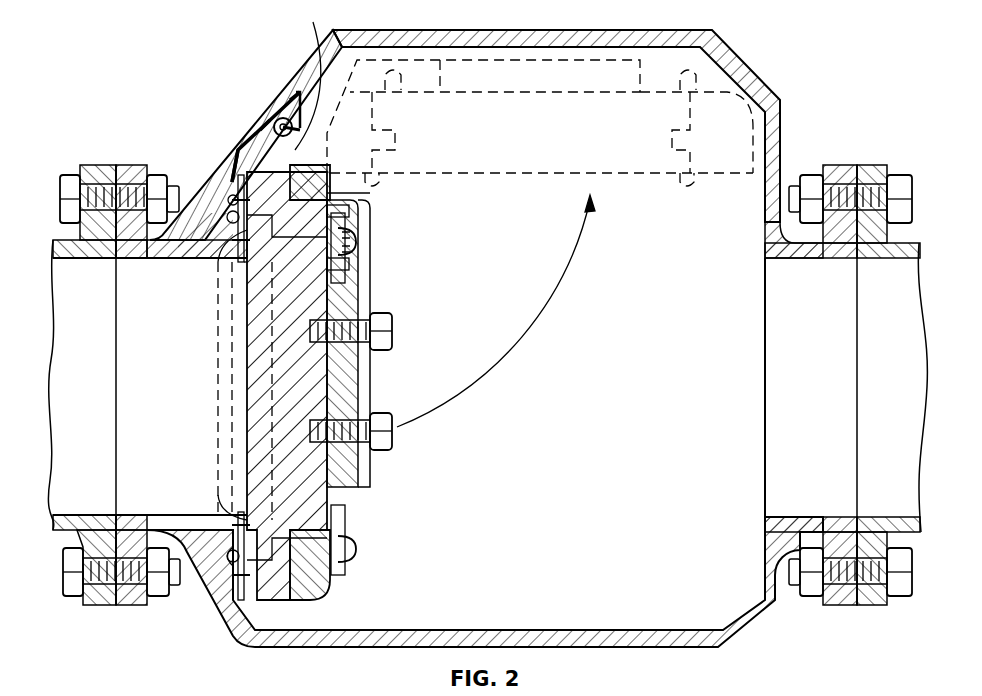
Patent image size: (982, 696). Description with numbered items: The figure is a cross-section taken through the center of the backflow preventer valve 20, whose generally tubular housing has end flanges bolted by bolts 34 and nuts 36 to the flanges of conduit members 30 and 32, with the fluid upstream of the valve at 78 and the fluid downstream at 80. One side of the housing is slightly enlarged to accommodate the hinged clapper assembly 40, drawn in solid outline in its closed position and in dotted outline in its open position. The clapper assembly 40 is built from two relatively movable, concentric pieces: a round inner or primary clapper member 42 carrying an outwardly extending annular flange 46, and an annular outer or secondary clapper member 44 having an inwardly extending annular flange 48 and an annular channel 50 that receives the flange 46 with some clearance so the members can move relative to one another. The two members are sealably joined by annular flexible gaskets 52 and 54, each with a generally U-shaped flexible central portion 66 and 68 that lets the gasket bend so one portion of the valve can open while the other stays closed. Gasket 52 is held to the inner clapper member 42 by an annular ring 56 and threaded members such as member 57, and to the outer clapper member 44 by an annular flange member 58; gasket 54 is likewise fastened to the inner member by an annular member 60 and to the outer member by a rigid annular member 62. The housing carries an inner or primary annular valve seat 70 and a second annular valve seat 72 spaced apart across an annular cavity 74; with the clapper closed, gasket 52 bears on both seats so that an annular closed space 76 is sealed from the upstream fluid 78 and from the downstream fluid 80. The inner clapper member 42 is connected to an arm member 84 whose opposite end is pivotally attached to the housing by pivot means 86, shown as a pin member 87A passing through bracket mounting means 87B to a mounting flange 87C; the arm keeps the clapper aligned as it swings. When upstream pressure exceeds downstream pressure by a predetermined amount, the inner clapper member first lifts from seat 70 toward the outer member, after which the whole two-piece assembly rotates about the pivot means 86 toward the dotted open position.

The backflow preventer valve 20 is at (612, 10).
The conduit member 30 is at (68, 514).
The conduit member 32 is at (876, 252).
The bolts 34 is at (67, 180).
The nuts 36 is at (157, 180).
The hinged clapper assembly 40 is at (544, 188).
The inner or primary clapper member 42 is at (283, 484).
The outer or secondary clapper member 44 is at (306, 578).
The outwardly extending annular flange 46 is at (246, 282).
The inwardly extending annular flange 48 is at (373, 195).
The annular channel 50 is at (305, 195).
The annular flexible gasket 52 is at (227, 178).
The annular flexible gasket 54 is at (333, 280).
The annular ring 56 is at (230, 246).
The threaded member 57 is at (245, 270).
The annular flange member 58 is at (255, 165).
The annular member 60 is at (337, 268).
The rigid annular member 62 is at (350, 208).
The U-shaped flexible central portion 66 is at (228, 214).
The U-shaped flexible central portion 68 is at (350, 238).
The inner or primary annular valve seat 70 is at (240, 262).
The annular valve seat 72 is at (230, 200).
The annular cavity 74 is at (233, 238).
The annular closed space 76 is at (230, 566).
The upstream fluid 78 is at (98, 424).
The downstream fluid 80 is at (660, 432).
The arm member 84 is at (363, 366).
The pivot means 86 is at (255, 170).
The pin member 87A is at (245, 157).
The bracket mounting means 87B is at (362, 32).
The mounting flange 87C is at (232, 172).